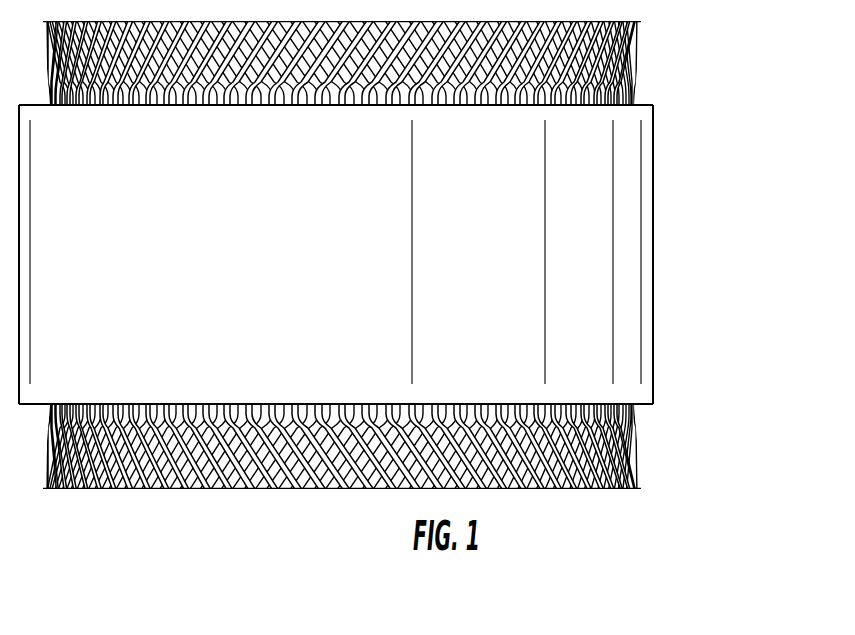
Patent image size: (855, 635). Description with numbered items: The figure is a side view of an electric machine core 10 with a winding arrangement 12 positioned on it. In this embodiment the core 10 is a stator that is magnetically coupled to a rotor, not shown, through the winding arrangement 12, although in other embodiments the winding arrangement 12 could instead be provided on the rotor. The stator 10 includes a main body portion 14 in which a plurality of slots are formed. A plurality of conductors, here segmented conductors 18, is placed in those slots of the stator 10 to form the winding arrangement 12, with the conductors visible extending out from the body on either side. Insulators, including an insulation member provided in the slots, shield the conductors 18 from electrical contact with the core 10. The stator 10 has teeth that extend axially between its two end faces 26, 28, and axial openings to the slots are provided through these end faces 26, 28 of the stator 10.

The electric machine core 10 is at (348, 266).
The winding arrangement 12 is at (379, 298).
The main body portion 14 is at (627, 307).
The segmented conductors 18 is at (637, 43).
The end face 26 is at (637, 106).
The end face 28 is at (638, 405).